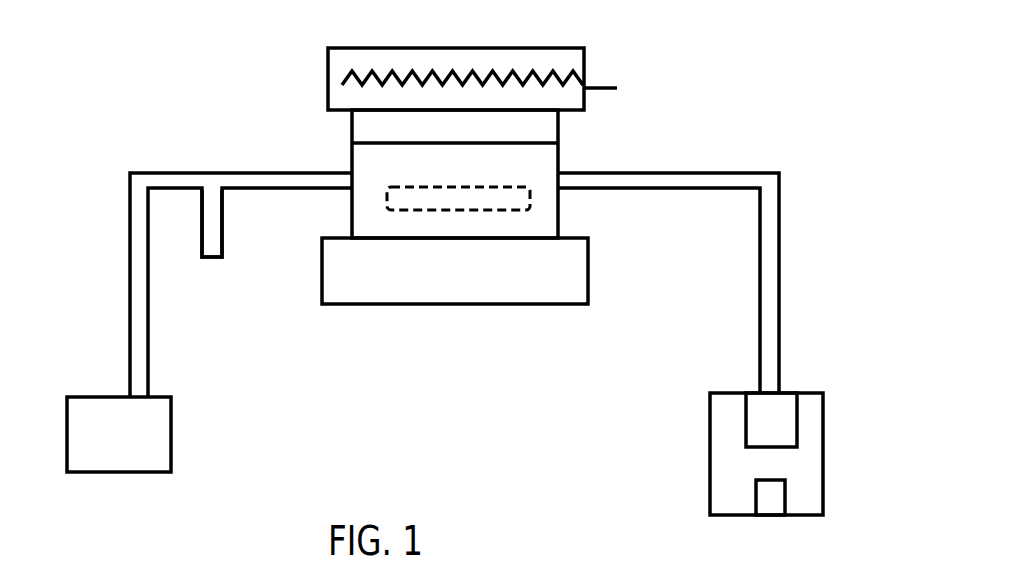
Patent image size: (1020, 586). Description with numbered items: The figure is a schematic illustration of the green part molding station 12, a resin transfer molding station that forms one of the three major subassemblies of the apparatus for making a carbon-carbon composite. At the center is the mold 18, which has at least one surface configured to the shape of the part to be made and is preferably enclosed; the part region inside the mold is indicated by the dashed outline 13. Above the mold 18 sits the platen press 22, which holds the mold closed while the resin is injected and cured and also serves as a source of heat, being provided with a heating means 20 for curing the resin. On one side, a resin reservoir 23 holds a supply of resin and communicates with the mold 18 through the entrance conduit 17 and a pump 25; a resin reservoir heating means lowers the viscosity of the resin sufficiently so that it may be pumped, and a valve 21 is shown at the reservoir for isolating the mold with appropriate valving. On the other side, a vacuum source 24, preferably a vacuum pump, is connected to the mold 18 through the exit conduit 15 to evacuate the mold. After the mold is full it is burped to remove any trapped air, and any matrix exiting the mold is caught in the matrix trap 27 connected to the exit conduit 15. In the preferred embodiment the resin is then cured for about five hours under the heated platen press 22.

The green part molding station 12 is at (673, 110).
The workpiece / sample 13 is at (387, 192).
The first conduit 15 is at (130, 200).
The entrance conduit 17 is at (779, 286).
The mold 18 is at (560, 157).
The heating means 20 is at (605, 88).
The valve 21 is at (785, 505).
The platen press 22 is at (512, 48).
The resin reservoir 23 is at (823, 480).
The vacuum source 24 is at (171, 425).
The pump 25 is at (797, 418).
The matrix trap 27 is at (222, 234).